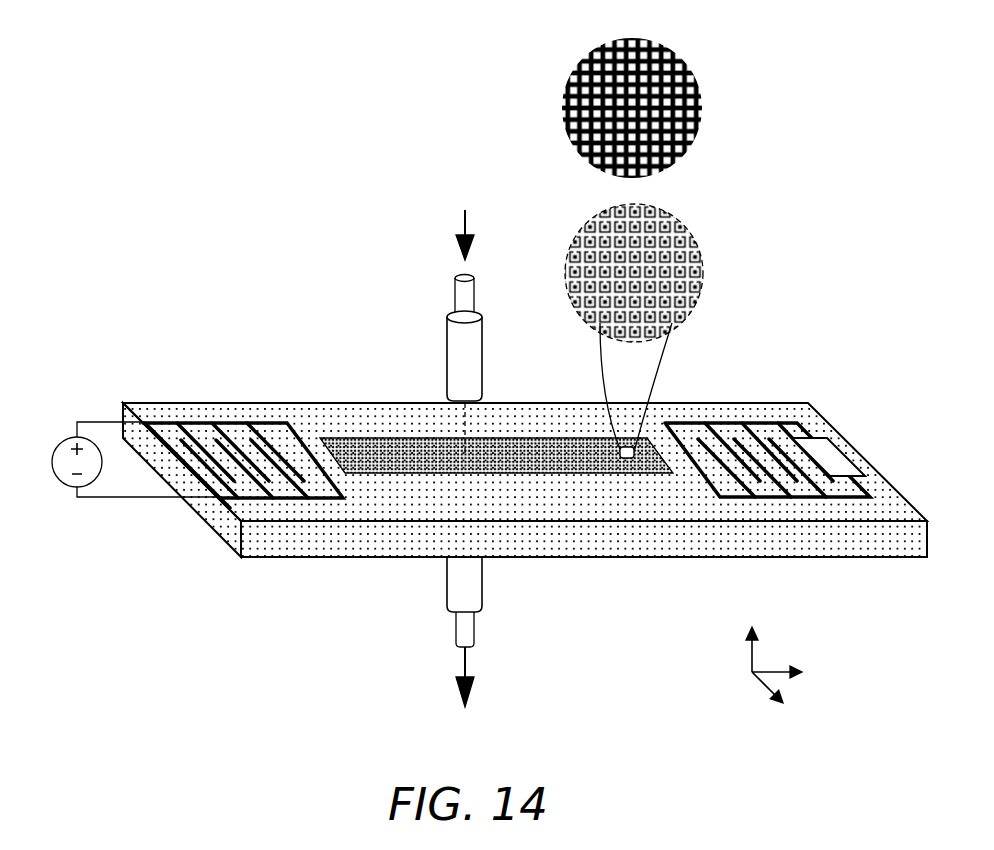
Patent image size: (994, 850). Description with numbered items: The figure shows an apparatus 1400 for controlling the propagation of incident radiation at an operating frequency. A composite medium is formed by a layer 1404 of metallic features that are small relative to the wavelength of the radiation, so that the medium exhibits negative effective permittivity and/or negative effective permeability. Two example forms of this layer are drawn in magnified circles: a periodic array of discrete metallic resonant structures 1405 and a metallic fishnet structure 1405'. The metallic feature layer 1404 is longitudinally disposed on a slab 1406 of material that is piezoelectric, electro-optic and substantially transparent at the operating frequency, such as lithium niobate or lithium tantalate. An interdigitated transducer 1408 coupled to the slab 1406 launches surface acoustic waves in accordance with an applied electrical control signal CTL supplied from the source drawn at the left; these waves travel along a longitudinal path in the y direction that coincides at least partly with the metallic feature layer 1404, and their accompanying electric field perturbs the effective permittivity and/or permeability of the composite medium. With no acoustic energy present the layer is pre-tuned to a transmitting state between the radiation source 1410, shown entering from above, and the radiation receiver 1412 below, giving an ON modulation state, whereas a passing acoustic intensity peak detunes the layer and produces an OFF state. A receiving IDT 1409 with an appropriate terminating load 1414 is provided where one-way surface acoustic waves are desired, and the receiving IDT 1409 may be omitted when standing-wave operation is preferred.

The apparatus 1400 is at (155, 275).
The metallic feature layer 1404 is at (533, 450).
The periodic array of discrete metallic resonant structures 1405 is at (674, 329).
The metallic fishnet structure 1405' is at (674, 101).
The slab 1406 is at (584, 500).
The interdigitated transducer 1408 is at (202, 422).
The receiving IDT 1409 is at (740, 422).
The radiation source 1410 is at (452, 352).
The radiation receiver 1412 is at (457, 580).
The terminating load 1414 is at (826, 447).